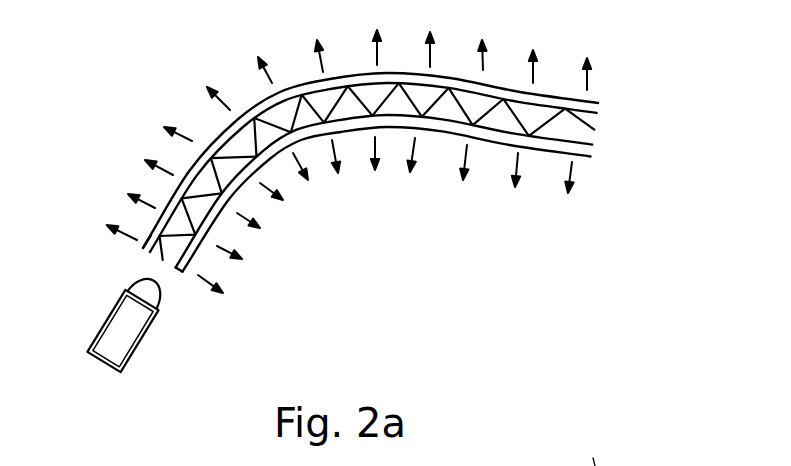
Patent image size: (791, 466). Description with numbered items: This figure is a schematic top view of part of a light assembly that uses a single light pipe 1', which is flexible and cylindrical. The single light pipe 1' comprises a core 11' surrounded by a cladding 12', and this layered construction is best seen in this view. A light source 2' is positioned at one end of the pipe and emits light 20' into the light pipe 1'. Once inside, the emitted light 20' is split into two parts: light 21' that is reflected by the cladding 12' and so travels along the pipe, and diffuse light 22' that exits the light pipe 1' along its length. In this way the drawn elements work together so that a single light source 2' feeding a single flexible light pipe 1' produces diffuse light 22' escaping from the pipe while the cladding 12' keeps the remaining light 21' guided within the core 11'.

The single light pipe 1' is at (370, 183).
The core 11' is at (422, 172).
The reflected light 21' is at (427, 171).
The diffuse light 22' is at (386, 215).
The cladding 12' is at (94, 256).
The emitted light 20' is at (218, 314).
The light source 2' is at (153, 342).